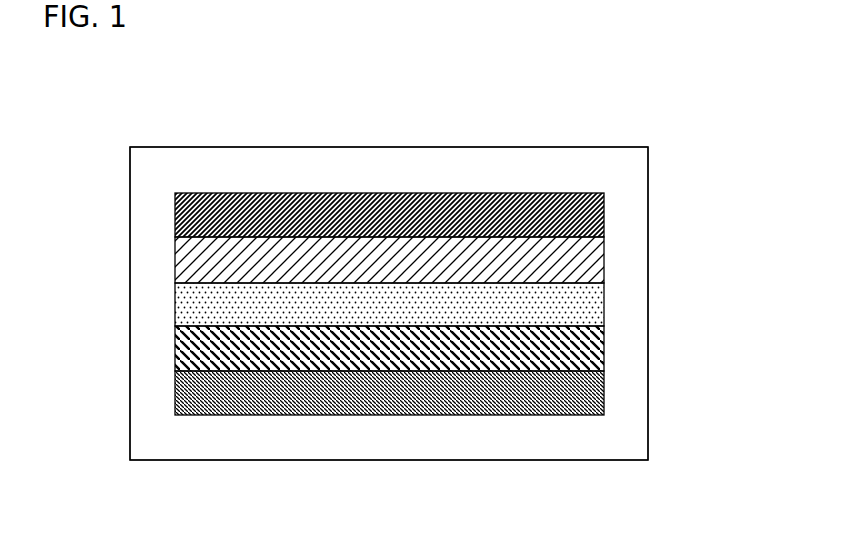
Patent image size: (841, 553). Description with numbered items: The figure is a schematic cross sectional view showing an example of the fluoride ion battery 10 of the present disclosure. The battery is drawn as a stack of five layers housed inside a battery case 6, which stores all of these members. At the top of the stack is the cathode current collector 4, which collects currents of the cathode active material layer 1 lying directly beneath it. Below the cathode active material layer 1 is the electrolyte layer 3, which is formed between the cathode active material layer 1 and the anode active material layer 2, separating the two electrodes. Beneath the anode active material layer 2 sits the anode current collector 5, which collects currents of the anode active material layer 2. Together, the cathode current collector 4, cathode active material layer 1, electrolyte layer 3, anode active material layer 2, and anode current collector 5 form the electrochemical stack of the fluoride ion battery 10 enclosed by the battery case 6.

The fluoride ion battery 10 is at (635, 112).
The battery case 6 is at (617, 179).
The cathode current collector 4 is at (590, 217).
The cathode active material layer 1 is at (577, 268).
The electrolyte layer 3 is at (573, 312).
The anode active material layer 2 is at (577, 354).
The anode current collector 5 is at (573, 399).